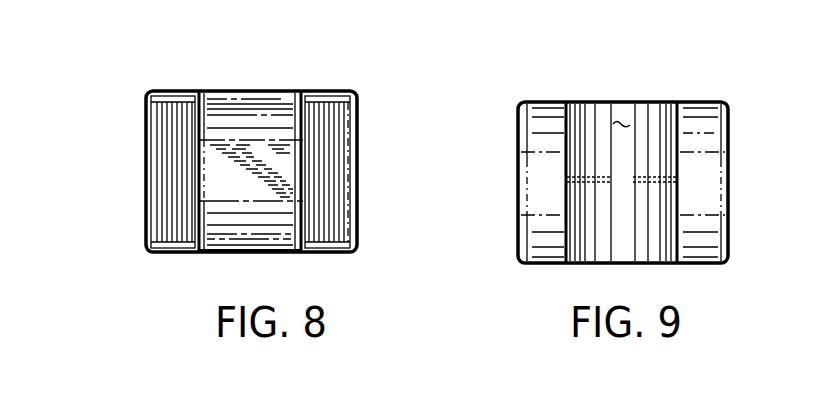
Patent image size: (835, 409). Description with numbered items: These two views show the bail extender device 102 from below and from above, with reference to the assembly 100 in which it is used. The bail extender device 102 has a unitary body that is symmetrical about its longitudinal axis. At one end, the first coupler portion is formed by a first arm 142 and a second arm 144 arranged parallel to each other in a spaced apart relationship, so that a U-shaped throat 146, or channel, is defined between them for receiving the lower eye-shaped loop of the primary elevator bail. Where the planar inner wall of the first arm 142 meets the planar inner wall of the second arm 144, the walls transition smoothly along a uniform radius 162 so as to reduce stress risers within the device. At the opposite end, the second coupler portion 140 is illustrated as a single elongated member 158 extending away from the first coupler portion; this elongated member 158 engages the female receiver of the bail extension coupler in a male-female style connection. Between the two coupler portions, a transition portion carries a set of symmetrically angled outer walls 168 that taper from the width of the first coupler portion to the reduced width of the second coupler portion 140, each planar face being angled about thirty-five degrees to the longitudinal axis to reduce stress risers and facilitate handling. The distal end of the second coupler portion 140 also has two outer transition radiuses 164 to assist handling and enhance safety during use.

In FIG. 8, the connector assembly 100 is at (148, 68).
In FIG. 9, the connector assembly 100 is at (520, 80).
In FIG. 8, the bail extender device 102 is at (117, 91).
In FIG. 9, the bail extender device 102 is at (493, 108).
In FIG. 8, the second coupler portion 140 is at (196, 266).
In FIG. 9, the first arm 142 is at (518, 170).
In FIG. 9, the second arm 144 is at (728, 178).
In FIG. 9, the U-shaped throat 146 is at (623, 122).
In FIG. 8, the single elongated member 158 is at (203, 210).
In FIG. 9, the uniform radius 162 is at (620, 235).
In FIG. 8, the outer transition radiuses 164 is at (260, 100).
In FIG. 8, the symmetrically angled outer walls 168 is at (168, 176).